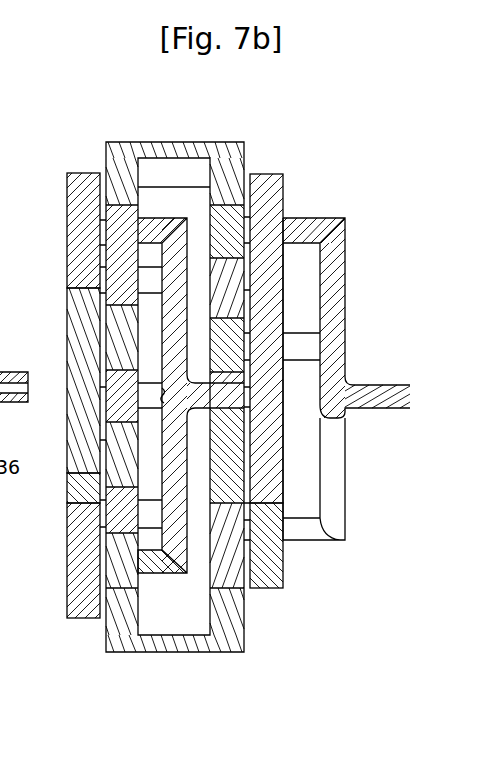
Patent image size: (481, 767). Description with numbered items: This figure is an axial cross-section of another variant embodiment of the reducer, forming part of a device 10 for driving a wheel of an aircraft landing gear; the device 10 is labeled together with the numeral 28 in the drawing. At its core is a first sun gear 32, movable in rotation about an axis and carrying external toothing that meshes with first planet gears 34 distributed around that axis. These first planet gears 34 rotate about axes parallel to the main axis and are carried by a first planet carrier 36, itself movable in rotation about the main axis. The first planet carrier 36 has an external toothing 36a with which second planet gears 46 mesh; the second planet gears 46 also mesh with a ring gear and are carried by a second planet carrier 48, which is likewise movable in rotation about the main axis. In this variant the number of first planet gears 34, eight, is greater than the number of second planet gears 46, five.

The device for driving a wheel 10 is at (237, 358).
The drive assembly 28 is at (268, 135).
The first sun gear 32 is at (66, 487).
The first planet gears 34 is at (66, 190).
The first planet carrier 36 is at (229, 470).
The external toothing of the first planet carrier 36a is at (280, 473).
The second planet gears 46 is at (265, 590).
The second planet carrier 48 is at (340, 478).